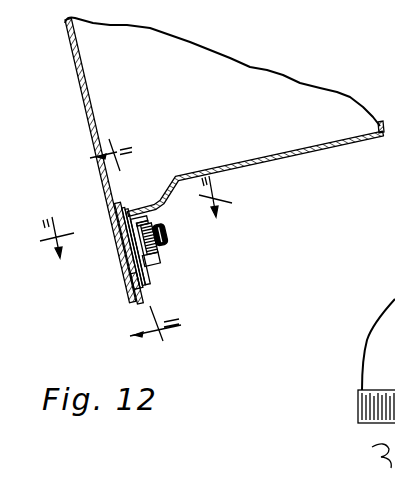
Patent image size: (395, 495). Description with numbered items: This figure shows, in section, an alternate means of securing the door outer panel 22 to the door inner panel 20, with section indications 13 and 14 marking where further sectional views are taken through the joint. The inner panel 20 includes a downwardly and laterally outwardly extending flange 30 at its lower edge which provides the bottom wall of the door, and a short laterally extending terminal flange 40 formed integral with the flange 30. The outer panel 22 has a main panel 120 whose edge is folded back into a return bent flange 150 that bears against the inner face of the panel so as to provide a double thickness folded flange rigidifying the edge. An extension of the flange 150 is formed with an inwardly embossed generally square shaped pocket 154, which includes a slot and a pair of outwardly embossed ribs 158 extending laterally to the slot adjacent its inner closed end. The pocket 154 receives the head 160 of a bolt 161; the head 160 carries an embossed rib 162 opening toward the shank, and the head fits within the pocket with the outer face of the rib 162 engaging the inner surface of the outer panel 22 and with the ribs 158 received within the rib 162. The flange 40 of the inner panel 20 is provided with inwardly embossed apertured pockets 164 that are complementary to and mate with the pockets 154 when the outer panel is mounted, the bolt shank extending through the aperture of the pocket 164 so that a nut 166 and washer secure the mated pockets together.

The section line 13- 13 is at (140, 236).
The section line 14- 14 is at (130, 217).
The door inner panel 20 is at (375, 146).
The door outer panel 22 is at (73, 69).
The flange 30 is at (219, 167).
The flange 40 is at (146, 221).
The main panel 120 is at (82, 98).
The return bent flange 150 is at (132, 301).
The pocket 154 is at (161, 252).
The ribs 158 is at (131, 268).
The head 160 is at (125, 218).
The bolt 161 is at (114, 232).
The embossed rib 162 is at (118, 254).
The pockets 164 is at (153, 266).
The nut 166 is at (161, 224).